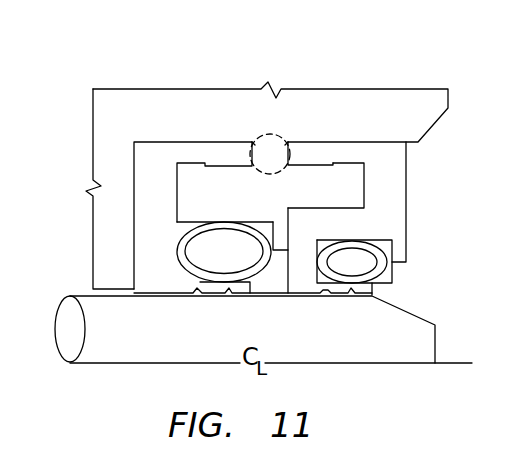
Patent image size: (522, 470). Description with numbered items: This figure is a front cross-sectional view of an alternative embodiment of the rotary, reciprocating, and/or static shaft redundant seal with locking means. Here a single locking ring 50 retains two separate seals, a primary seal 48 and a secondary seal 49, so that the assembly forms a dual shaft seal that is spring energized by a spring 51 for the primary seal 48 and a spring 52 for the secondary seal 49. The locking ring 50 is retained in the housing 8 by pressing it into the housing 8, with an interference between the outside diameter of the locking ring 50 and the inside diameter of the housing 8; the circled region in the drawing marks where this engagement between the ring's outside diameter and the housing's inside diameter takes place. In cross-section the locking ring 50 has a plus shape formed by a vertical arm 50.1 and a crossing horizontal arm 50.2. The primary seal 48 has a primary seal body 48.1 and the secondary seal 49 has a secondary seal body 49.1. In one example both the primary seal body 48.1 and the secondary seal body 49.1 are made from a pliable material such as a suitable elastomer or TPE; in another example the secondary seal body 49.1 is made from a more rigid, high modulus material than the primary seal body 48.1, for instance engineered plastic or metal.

The housing 8 is at (296, 110).
The primary seal 48 is at (192, 298).
The primary seal body 48.1 is at (156, 160).
The secondary seal 49 is at (374, 288).
The secondary seal body 49.1 is at (383, 193).
The locking ring 50 is at (320, 193).
The vertical arm 50.1 is at (270, 155).
The horizontal arm 50.2 is at (351, 178).
The spring 51 is at (180, 220).
The spring 52 is at (392, 244).